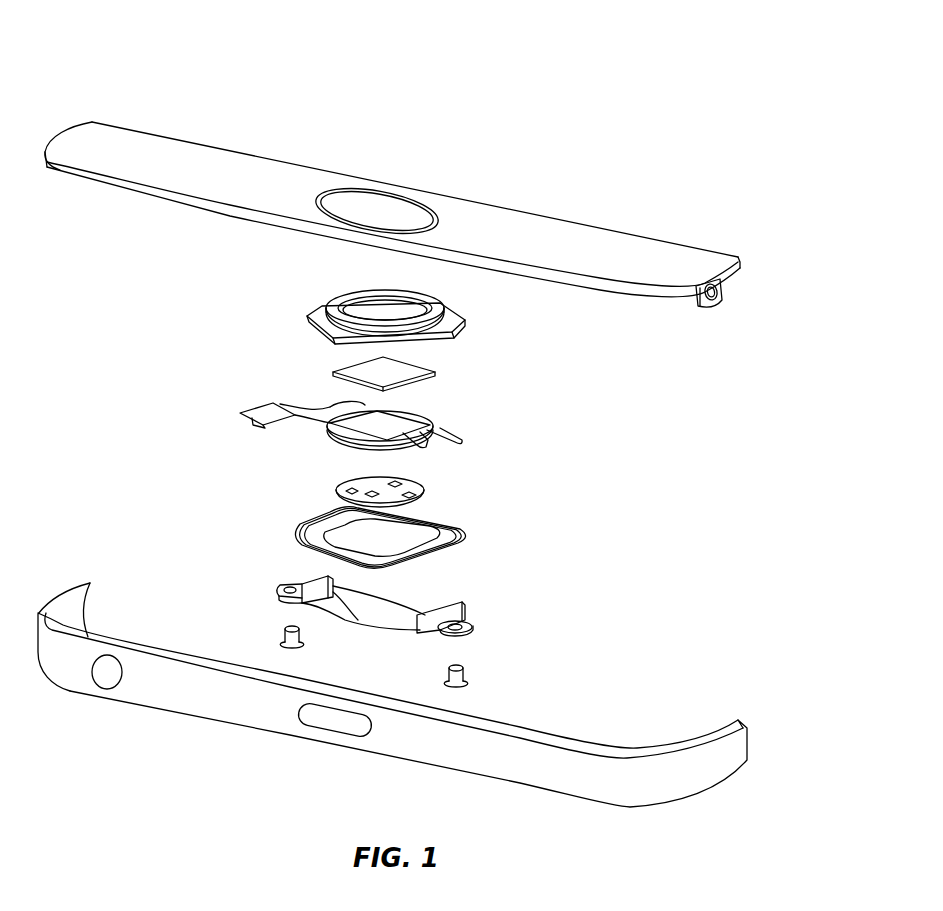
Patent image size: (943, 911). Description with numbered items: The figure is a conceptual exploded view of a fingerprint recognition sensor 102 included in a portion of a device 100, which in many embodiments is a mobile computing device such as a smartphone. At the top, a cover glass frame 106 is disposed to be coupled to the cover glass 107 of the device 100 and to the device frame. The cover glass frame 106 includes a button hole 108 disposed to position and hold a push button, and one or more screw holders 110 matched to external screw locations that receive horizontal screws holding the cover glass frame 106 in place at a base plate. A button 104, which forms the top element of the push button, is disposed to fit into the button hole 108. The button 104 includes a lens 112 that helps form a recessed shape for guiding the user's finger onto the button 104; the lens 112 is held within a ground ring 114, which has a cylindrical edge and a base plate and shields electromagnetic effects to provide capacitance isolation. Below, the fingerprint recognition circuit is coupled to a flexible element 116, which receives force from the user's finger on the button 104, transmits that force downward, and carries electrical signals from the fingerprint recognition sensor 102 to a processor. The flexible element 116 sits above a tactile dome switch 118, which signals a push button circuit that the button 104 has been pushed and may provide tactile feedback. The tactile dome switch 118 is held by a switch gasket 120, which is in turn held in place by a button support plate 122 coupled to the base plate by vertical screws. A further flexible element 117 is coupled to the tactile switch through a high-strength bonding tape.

The device 100 is at (48, 63).
The fingerprint recognition sensor 102 is at (435, 372).
The button 104 is at (308, 316).
The cover glass frame 106 is at (590, 228).
The cover glass 107 is at (511, 225).
The button hole 108 is at (328, 189).
The screw holder 110 is at (722, 284).
The lens 112 is at (361, 310).
The ground ring 114 is at (440, 302).
The flexible element 116 is at (462, 437).
The flexible element 117 is at (552, 730).
The tactile dome switch 118 is at (430, 488).
The switch gasket 120 is at (470, 535).
The button support plate 122 is at (465, 604).